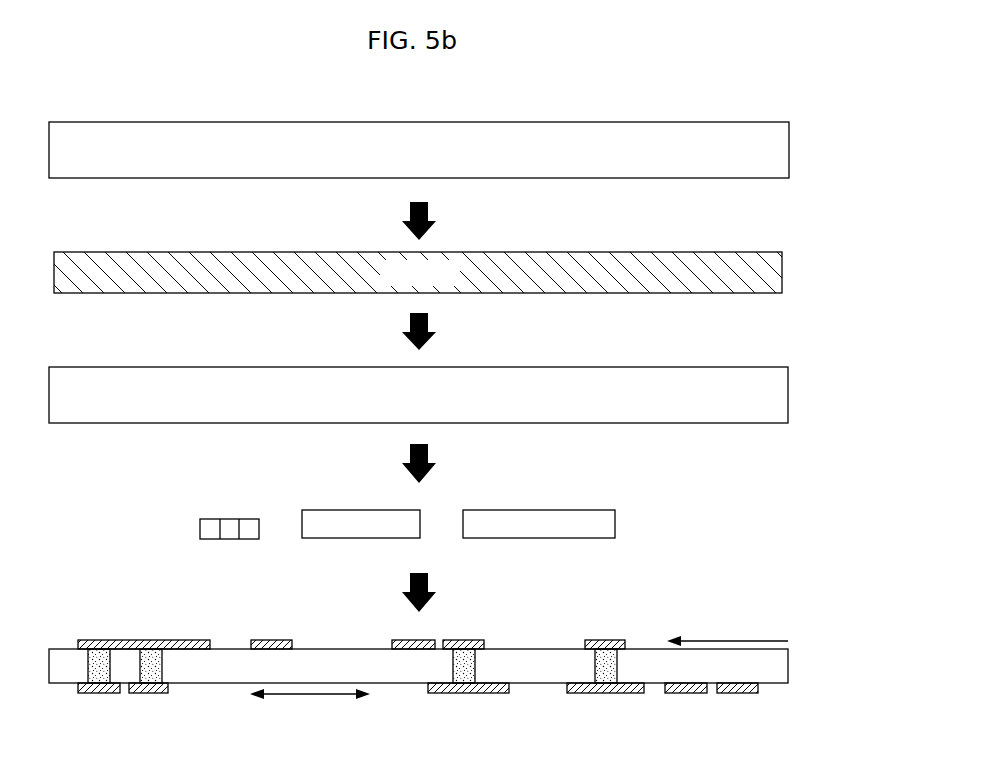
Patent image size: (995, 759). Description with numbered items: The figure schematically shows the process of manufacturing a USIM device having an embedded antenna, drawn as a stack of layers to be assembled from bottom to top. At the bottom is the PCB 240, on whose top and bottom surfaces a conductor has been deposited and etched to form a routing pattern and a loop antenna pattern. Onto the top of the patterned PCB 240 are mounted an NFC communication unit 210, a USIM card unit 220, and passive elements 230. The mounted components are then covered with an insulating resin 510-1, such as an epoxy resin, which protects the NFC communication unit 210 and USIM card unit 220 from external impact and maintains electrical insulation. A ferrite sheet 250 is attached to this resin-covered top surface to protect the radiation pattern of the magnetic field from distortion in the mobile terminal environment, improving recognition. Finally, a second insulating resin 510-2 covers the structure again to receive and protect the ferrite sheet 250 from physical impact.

The insulating resin 510-2 is at (770, 157).
The ferrite sheet 250 is at (768, 280).
The insulating resin 510-1 is at (768, 400).
The passive elements 230 is at (229, 525).
The NFC communication unit 210 is at (324, 518).
The USIM card unit 220 is at (490, 518).
The PCB 240 is at (773, 674).